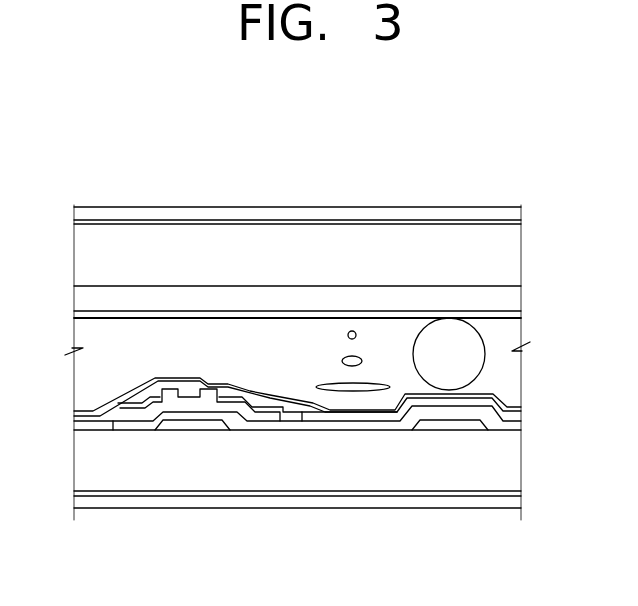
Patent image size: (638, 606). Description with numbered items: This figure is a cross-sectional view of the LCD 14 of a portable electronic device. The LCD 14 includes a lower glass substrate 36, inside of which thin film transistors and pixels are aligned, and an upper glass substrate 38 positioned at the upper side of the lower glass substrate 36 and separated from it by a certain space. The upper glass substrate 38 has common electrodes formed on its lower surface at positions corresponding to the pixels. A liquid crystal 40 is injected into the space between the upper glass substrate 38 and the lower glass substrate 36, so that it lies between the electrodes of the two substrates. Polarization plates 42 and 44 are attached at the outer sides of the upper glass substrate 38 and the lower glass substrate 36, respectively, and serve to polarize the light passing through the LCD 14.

The LCD 14 is at (447, 170).
The lower glass substrate 36 is at (307, 480).
The upper glass substrate 38 is at (247, 245).
The liquid crystal 40 is at (353, 331).
The polarization plate 42 is at (203, 214).
The polarization plate 44 is at (242, 503).